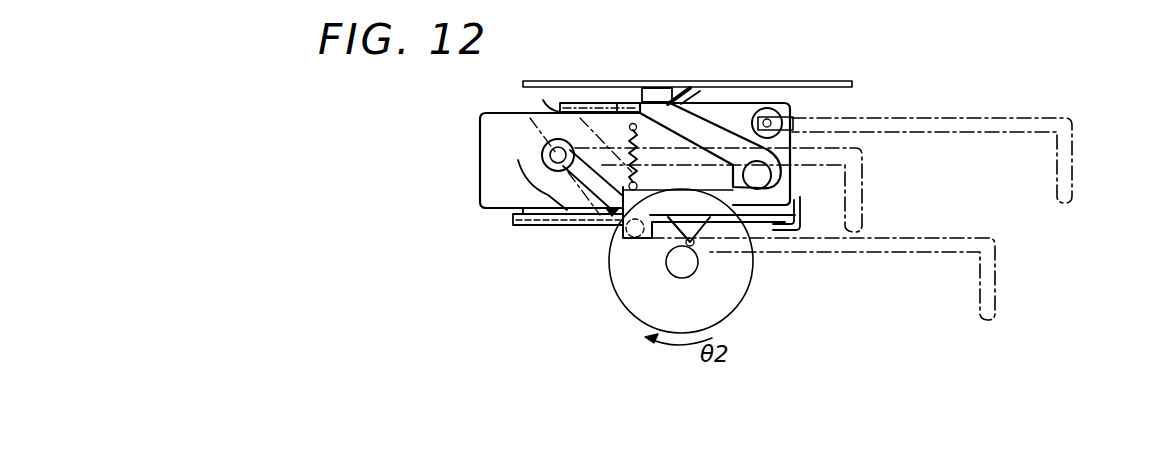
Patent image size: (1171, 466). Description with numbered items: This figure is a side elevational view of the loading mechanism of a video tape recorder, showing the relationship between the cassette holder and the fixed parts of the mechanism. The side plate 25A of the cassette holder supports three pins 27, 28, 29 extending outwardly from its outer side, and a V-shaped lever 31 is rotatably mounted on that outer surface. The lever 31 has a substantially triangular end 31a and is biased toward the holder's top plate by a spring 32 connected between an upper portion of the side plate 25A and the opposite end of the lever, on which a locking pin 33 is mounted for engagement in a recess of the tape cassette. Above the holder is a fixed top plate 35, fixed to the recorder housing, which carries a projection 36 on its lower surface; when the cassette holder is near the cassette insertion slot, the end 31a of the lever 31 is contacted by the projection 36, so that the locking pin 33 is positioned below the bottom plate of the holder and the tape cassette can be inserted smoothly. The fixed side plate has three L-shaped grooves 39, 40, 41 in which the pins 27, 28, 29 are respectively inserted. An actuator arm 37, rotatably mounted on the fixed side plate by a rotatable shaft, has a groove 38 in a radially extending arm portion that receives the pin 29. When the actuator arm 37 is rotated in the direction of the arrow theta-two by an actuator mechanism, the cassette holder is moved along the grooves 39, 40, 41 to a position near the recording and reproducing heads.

The side plate 25A is at (492, 172).
The pin 27 is at (788, 120).
The pin 28 is at (706, 222).
The pin 29 is at (518, 160).
The V-shaped lever 31 is at (747, 197).
The triangular end 31a is at (690, 98).
The spring 32 is at (640, 172).
The locking pin 33 is at (628, 240).
The fixed top plate 35 is at (833, 81).
The projection 36 is at (658, 96).
The actuator arm 37 is at (627, 312).
The groove 38 is at (575, 182).
The L-shaped groove 39 is at (1074, 168).
The L-shaped groove 40 is at (997, 290).
The L-shaped groove 41 is at (863, 205).